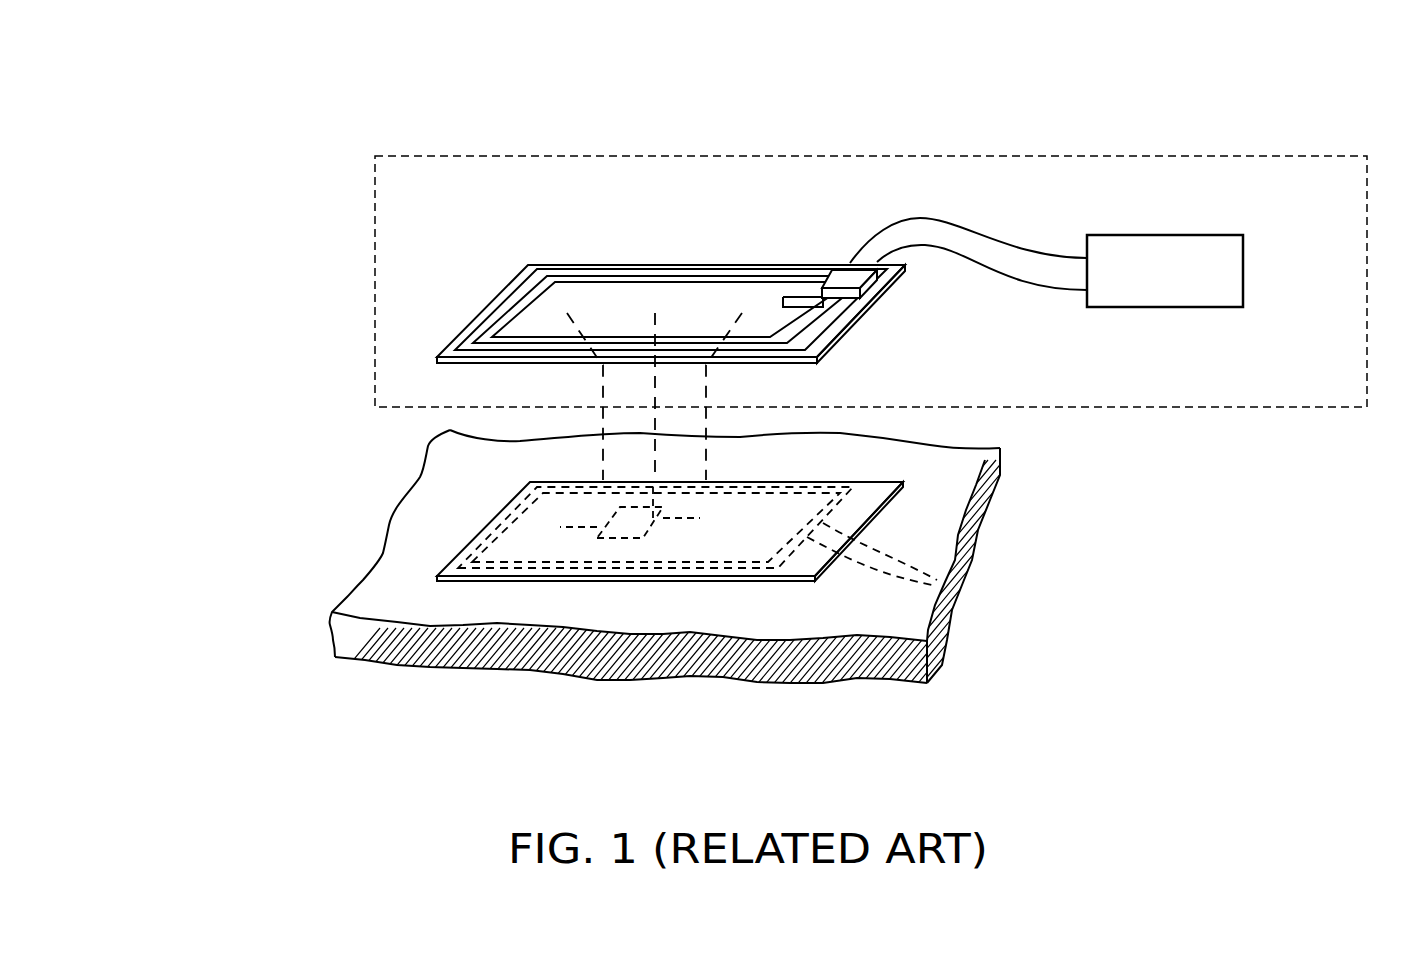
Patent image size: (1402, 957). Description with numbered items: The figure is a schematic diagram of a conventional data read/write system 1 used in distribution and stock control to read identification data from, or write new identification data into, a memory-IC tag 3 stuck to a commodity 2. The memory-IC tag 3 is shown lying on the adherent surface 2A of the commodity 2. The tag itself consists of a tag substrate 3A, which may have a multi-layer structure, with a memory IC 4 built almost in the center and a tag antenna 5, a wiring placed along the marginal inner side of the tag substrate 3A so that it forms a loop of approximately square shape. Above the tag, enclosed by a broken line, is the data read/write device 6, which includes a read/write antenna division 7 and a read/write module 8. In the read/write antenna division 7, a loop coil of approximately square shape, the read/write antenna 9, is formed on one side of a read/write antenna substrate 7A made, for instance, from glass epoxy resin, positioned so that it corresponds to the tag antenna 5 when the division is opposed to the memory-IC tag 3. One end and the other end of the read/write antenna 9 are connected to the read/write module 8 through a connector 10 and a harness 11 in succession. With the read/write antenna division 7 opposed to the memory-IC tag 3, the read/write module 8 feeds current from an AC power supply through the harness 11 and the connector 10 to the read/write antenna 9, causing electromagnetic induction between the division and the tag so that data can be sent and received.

The data read/write system 1 is at (785, 380).
The commodity 2 is at (664, 580).
The adherent surface 2A is at (824, 617).
The memory-IC tag 3 is at (723, 594).
The tag substrate 3A is at (497, 512).
The memory IC 4 is at (610, 543).
The tag antenna 5 is at (940, 582).
The data read/write device 6 is at (990, 153).
The read/write antenna division 7 is at (883, 357).
The read/write antenna substrate 7A is at (567, 263).
The read/write module 8 is at (1243, 276).
The read/write antenna 9 is at (512, 300).
The connector 10 is at (877, 277).
The harness 11 is at (1006, 246).